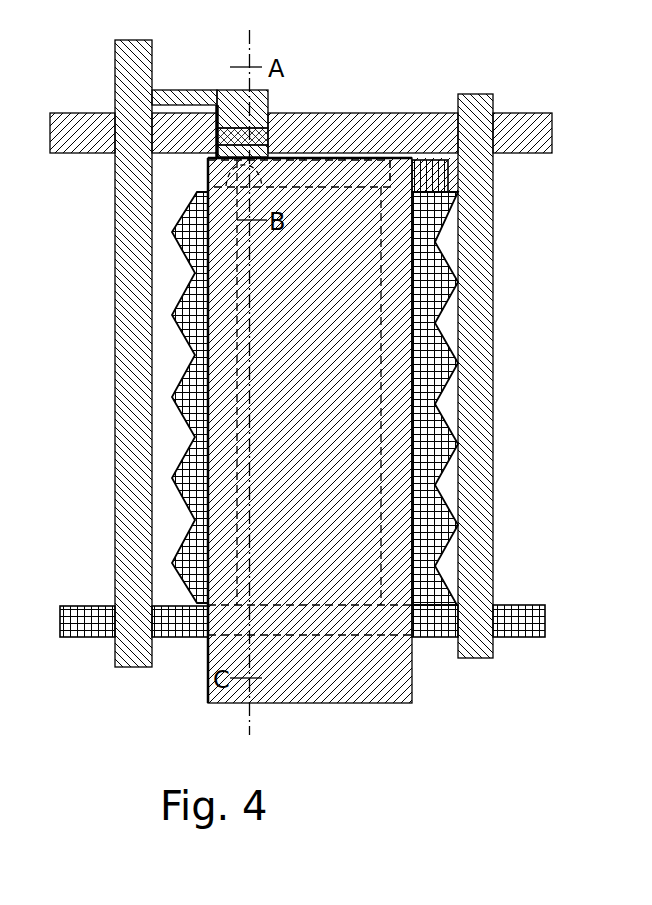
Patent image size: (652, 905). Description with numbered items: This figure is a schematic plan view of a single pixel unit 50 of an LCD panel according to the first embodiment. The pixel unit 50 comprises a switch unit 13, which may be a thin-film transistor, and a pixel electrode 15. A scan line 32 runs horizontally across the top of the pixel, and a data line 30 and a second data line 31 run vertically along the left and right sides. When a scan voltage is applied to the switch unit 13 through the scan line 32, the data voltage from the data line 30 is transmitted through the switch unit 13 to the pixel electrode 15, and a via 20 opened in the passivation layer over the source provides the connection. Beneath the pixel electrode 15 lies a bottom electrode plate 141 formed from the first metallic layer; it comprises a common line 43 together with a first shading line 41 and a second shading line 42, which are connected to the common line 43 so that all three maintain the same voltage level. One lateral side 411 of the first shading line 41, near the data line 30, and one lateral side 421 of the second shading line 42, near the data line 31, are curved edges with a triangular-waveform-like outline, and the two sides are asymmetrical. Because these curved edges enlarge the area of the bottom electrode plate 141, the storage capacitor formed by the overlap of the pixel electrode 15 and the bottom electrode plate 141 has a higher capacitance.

The pixel unit 50 is at (347, 34).
The switch unit 13 is at (214, 106).
The pixel electrode 15 is at (357, 417).
The via 20 is at (207, 186).
The data line 30 is at (125, 103).
The data line 31 is at (480, 108).
The scan line 32 is at (503, 130).
The first shading line 41 is at (207, 472).
The lateral side 411 is at (188, 272).
The second shading line 42 is at (516, 472).
The lateral side 421 is at (453, 338).
The common line 43 is at (420, 620).
The bottom electrode plate 141 is at (328, 481).